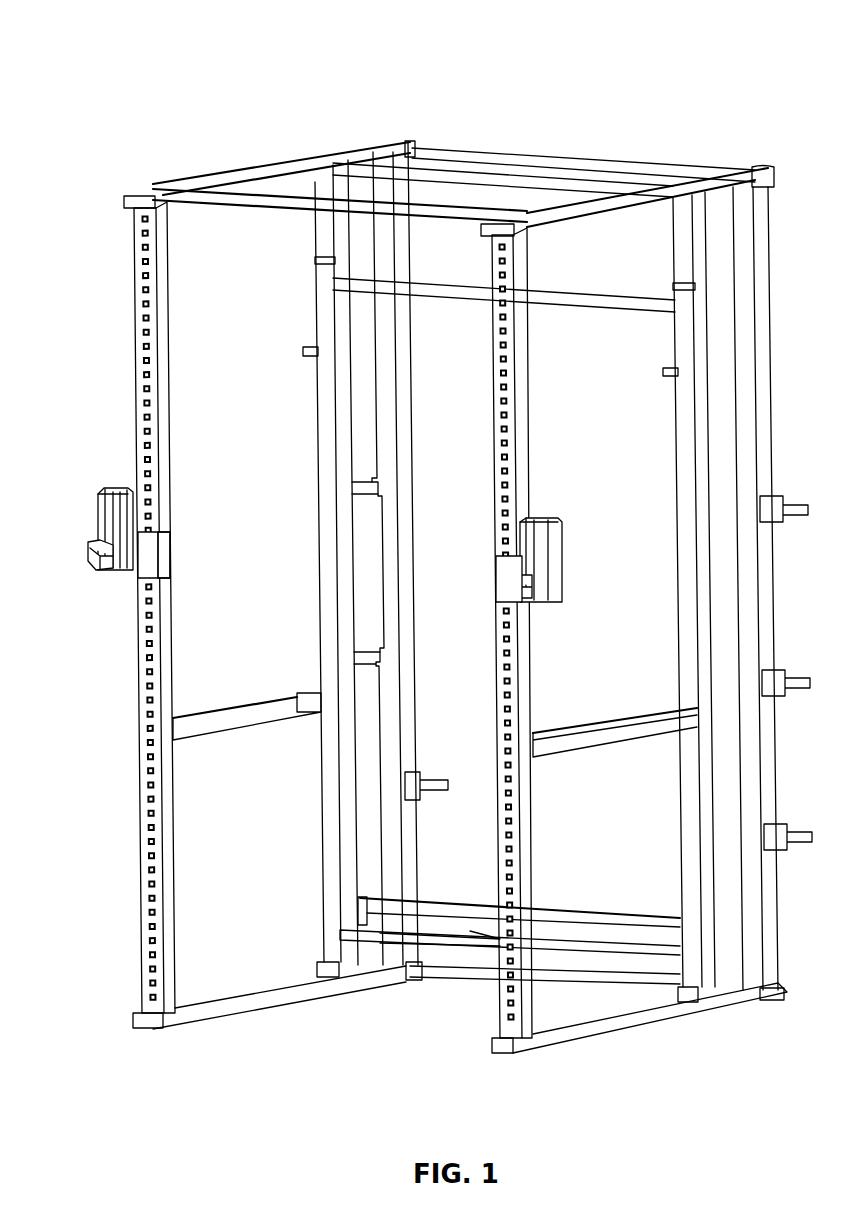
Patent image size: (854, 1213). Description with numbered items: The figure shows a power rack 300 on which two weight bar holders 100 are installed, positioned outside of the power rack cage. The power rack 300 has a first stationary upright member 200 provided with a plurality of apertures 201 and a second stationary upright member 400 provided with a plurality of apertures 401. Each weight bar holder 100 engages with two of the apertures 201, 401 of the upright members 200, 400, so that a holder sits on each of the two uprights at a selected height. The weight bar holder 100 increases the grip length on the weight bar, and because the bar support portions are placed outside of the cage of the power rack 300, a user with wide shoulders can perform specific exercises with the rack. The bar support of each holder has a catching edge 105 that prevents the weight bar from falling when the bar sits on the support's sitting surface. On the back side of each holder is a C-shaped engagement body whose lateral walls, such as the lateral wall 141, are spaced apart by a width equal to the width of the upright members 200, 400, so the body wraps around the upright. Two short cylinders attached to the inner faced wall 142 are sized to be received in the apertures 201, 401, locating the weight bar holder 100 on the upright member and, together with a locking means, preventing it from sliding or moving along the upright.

The power rack 300 is at (436, 535).
The second stationary upright member 400 is at (151, 612).
The plurality of apertures 401 is at (135, 376).
The first stationary upright member 200 is at (526, 638).
The plurality of apertures 201 is at (505, 738).
The weight bar holder 100 is at (63, 466).
The catching edge 105 is at (86, 554).
The lateral wall 141 is at (170, 563).
The inner faced wall 142 is at (150, 543).